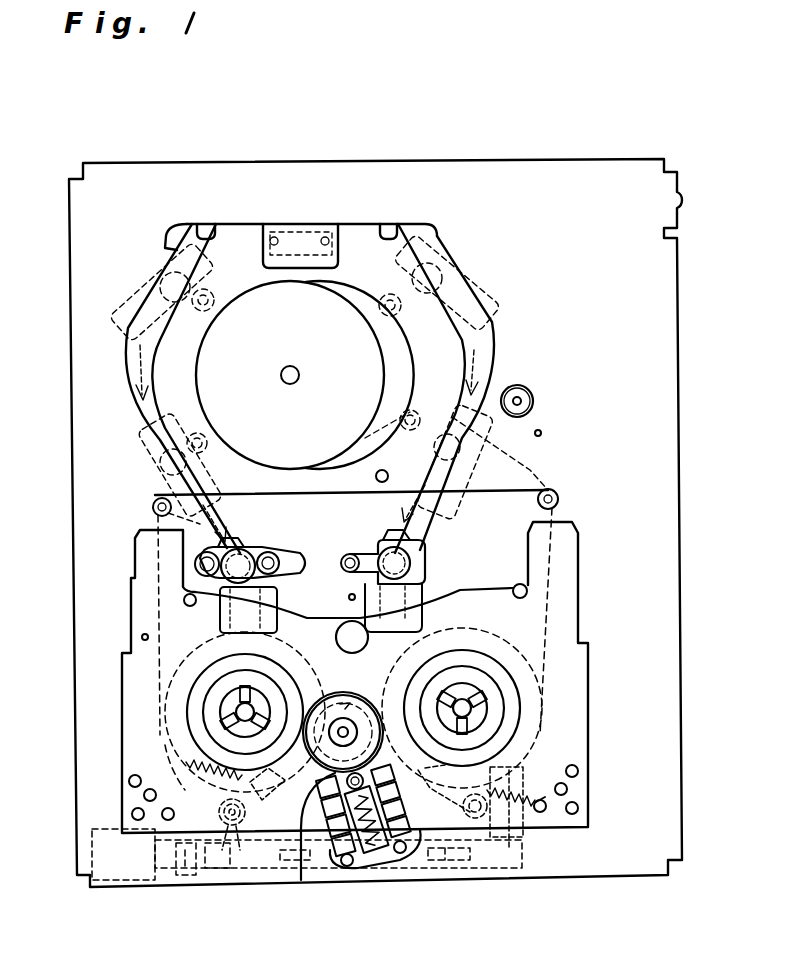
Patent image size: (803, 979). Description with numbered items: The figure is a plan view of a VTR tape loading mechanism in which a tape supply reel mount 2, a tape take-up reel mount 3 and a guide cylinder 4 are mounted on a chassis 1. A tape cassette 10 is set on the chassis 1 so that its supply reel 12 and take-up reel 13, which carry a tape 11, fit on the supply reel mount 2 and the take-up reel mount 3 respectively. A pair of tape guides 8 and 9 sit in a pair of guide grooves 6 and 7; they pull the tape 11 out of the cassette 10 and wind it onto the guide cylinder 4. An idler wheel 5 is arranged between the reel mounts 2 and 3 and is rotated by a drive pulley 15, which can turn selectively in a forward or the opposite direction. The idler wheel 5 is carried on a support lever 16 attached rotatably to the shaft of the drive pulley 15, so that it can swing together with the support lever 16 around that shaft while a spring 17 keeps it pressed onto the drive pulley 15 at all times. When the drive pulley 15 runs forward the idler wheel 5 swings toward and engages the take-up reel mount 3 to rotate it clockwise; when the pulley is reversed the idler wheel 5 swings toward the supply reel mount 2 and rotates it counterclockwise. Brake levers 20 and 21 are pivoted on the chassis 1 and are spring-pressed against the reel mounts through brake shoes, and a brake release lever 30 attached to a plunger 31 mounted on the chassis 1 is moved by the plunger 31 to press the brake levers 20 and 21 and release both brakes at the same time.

The chassis 1 is at (648, 427).
The tape supply reel mount 2 is at (205, 705).
The tape take-up reel mount 3 is at (495, 703).
The guide cylinder 4 is at (365, 375).
The idler wheel 5 is at (360, 715).
The guide groove 6 is at (135, 413).
The guide groove 7 is at (485, 422).
The tape guide 8 is at (250, 556).
The tape guide 9 is at (415, 585).
The tape cassette 10 is at (562, 600).
The tape 11 is at (515, 490).
The supply reel 12 is at (165, 737).
The take-up reel 13 is at (540, 735).
The drive pulley 15 is at (351, 790).
The support lever 16 is at (301, 878).
The spring 17 is at (380, 852).
The brake lever 20 is at (258, 870).
The brake lever 21 is at (430, 860).
The brake release lever 30 is at (495, 867).
The plunger 31 is at (125, 873).